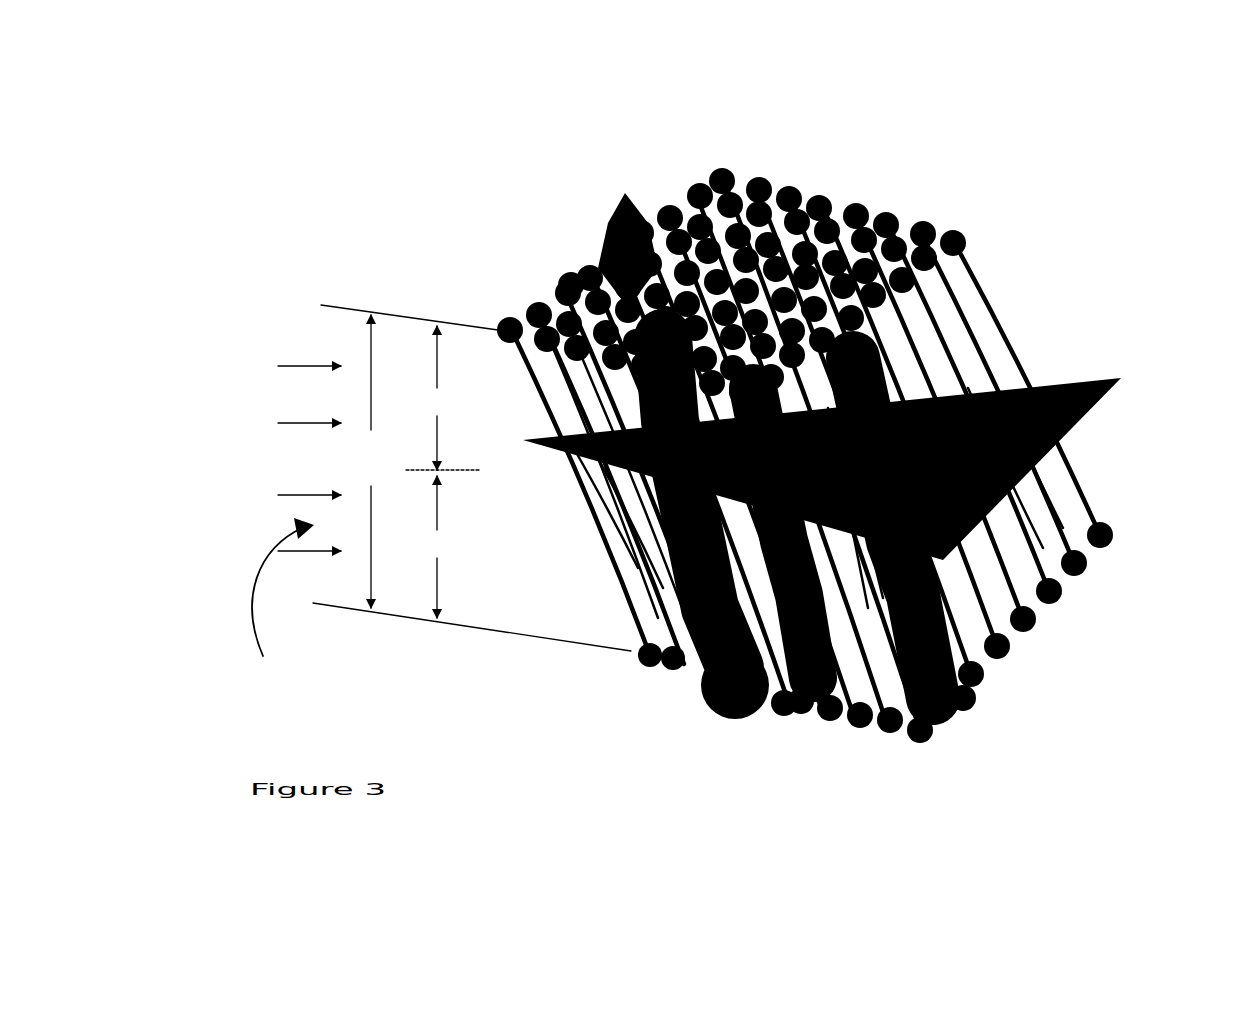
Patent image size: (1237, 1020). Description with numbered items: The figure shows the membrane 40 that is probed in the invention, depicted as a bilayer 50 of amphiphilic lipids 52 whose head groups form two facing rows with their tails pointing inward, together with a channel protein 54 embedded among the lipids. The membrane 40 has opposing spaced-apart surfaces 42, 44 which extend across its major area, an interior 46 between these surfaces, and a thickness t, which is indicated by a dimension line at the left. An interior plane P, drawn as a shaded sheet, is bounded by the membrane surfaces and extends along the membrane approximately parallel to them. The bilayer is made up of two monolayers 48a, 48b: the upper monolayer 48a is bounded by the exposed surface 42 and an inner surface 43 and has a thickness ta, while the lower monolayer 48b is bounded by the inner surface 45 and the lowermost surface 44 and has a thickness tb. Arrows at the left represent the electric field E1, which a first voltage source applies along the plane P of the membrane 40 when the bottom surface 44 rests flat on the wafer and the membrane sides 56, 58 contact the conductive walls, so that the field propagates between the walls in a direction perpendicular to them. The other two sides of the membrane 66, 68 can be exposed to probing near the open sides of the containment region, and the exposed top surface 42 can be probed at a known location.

The membrane 40 is at (1090, 297).
The membrane surface 42 is at (558, 262).
The monolayer surface 43 is at (1012, 352).
The membrane surface 44 is at (1070, 560).
The monolayer surface 45 is at (1113, 370).
The interior 46 is at (1090, 330).
The monolayer 48a is at (987, 294).
The monolayer 48b is at (1090, 446).
The bilayer 50 is at (283, 604).
The amphiphilic lipids 52 is at (950, 305).
The channel protein 54 is at (600, 215).
The membrane side 56 is at (600, 463).
The membrane side 58 is at (1048, 405).
The membrane side 66 is at (688, 690).
The membrane side 68 is at (782, 170).
The interior plane P is at (1047, 352).
The membrane thickness t is at (369, 461).
The monolayer thickness ta is at (443, 398).
The monolayer thickness tb is at (435, 547).
The electric field E1 is at (288, 458).